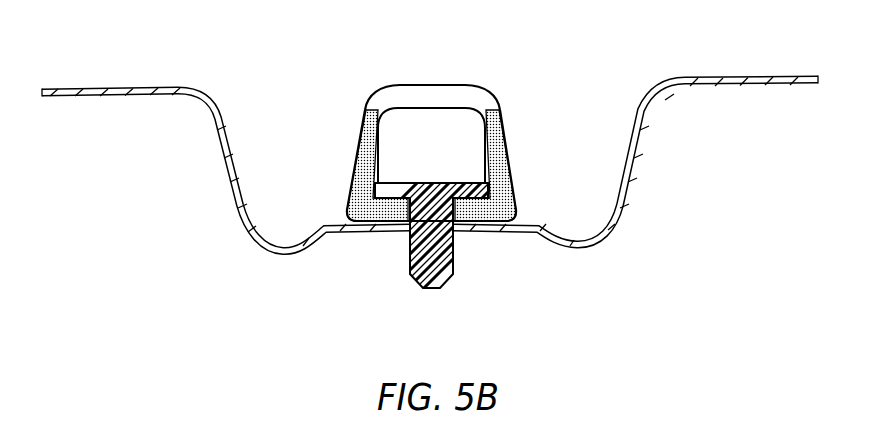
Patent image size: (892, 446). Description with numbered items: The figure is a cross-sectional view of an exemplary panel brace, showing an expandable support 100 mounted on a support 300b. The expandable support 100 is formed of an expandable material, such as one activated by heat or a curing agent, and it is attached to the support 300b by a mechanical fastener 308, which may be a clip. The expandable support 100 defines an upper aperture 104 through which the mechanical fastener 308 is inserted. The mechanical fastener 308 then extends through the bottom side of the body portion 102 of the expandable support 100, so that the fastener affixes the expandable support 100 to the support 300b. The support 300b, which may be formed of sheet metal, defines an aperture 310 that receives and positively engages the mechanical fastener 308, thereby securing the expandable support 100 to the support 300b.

The support 300b is at (110, 88).
The expandable support 100 is at (440, 158).
The body portion 102 is at (363, 213).
The upper aperture 104 is at (408, 102).
The mechanical fastener 308 is at (447, 273).
The aperture 310 is at (457, 233).